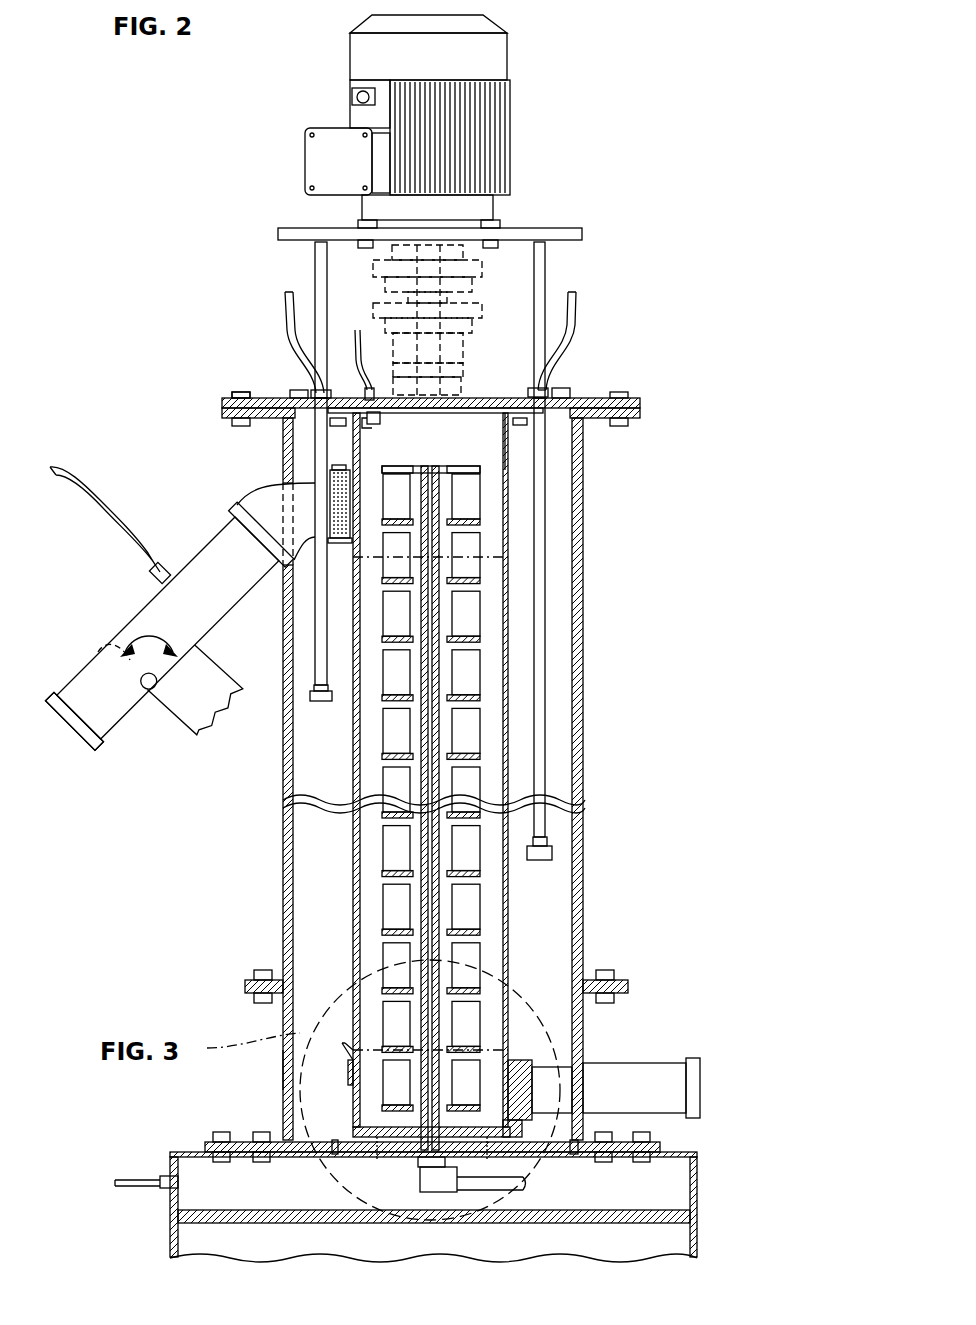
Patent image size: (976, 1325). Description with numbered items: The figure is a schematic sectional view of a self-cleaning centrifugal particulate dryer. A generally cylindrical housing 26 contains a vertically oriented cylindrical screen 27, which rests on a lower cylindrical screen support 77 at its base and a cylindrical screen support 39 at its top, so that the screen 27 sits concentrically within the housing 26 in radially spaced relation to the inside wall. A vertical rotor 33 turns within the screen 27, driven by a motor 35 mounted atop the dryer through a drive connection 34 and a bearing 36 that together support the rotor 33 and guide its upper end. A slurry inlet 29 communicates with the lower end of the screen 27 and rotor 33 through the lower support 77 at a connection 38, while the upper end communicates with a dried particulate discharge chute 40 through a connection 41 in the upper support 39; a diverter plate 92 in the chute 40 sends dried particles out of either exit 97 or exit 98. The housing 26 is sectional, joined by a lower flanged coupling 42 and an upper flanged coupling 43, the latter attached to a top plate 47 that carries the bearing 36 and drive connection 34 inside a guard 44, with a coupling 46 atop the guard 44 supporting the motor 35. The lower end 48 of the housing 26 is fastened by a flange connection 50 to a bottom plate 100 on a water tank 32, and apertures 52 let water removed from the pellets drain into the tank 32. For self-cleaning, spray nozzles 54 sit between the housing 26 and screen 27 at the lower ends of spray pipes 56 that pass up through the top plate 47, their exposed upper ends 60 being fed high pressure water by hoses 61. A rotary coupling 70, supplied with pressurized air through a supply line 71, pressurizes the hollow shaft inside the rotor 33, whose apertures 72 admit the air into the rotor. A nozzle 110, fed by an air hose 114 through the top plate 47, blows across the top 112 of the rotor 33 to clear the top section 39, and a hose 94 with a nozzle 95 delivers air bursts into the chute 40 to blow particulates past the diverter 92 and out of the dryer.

The housing 26 is at (577, 645).
The cylindrical screen 27 is at (510, 695).
The slurry inlet 29 is at (665, 1078).
The water tank 32 is at (697, 1180).
The rotor 33 is at (450, 483).
The drive connection 34 is at (480, 288).
The motor 35 is at (473, 133).
The bearing 36 is at (475, 367).
The connection 38 is at (517, 1057).
The upper screen support 39 is at (505, 440).
The dried particulate discharge chute 40 is at (203, 555).
The connection 41 is at (343, 467).
The flanged coupling 42 is at (628, 983).
The flanged coupling 43 is at (633, 403).
The housing or guard 44 is at (520, 303).
The coupling 46 is at (500, 228).
The top plate 47 is at (270, 398).
The lower end of the housing 48 is at (283, 1068).
The flange connection 50 is at (657, 1137).
The apertures 52 is at (335, 1155).
The spray nozzles 54 is at (322, 701).
The spray pipes 56 is at (540, 540).
The upper ends of the spray pipes 60 is at (542, 372).
The hoses 61 is at (288, 300).
The rotary coupling 70 is at (420, 1180).
The hose or supply line 71 is at (493, 1190).
The apertures 72 is at (440, 630).
The lower screen support 77 is at (357, 1105).
The diverter plate 92 is at (98, 652).
The hose 94 is at (97, 498).
The nozzle 95 is at (155, 578).
The exit 97 is at (65, 728).
The exit 98 is at (178, 707).
The bottom plate 100 is at (576, 1155).
The nozzle 110 is at (373, 400).
The top of the rotor 112 is at (390, 468).
The air hose 114 is at (357, 338).